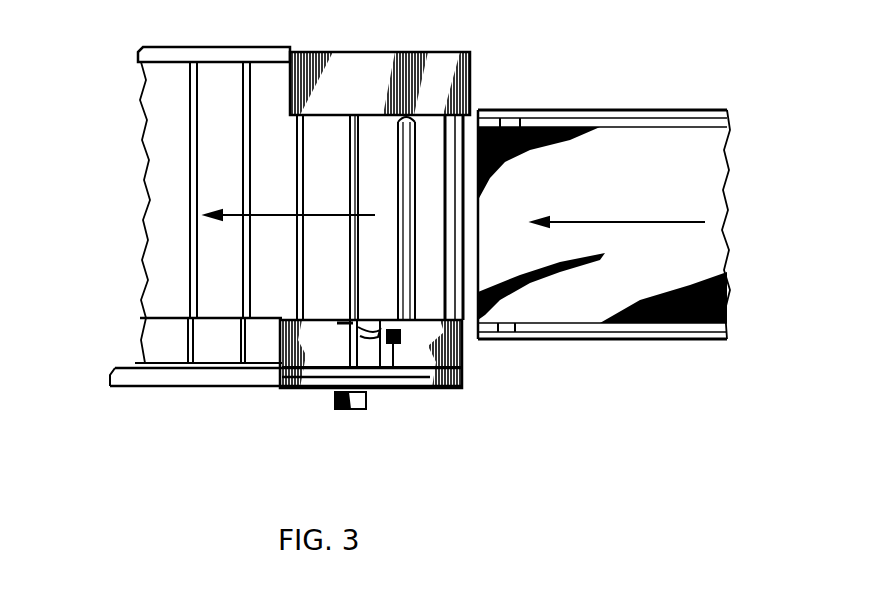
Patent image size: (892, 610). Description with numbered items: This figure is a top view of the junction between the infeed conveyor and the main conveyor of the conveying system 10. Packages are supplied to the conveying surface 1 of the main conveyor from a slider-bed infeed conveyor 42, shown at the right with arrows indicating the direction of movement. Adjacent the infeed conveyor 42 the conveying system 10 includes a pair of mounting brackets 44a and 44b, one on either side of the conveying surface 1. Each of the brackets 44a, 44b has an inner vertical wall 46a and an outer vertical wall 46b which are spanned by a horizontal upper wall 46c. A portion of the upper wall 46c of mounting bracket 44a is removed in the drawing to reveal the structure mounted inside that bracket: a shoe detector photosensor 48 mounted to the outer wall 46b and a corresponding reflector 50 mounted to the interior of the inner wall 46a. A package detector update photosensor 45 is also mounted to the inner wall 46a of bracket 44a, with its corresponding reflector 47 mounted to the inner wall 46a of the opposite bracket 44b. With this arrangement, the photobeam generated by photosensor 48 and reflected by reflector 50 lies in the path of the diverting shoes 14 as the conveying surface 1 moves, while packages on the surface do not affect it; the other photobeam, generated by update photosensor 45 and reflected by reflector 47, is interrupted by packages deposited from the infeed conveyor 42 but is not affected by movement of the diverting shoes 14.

The conveying surface 1 is at (337, 200).
The conveying system 10 is at (170, 386).
The diverting shoes 14 is at (323, 360).
The slider-bed infeed conveyor 42 is at (565, 165).
The mounting bracket 44a is at (293, 348).
The mounting bracket 44b is at (383, 73).
The package detector update photosensor 45 is at (430, 388).
The inner vertical wall 46a is at (320, 123).
The outer vertical wall 46b is at (405, 52).
The horizontal upper wall 46c is at (462, 368).
The reflector 47 is at (407, 125).
The shoe detector photosensor 48 is at (362, 410).
The reflector 50 is at (372, 332).